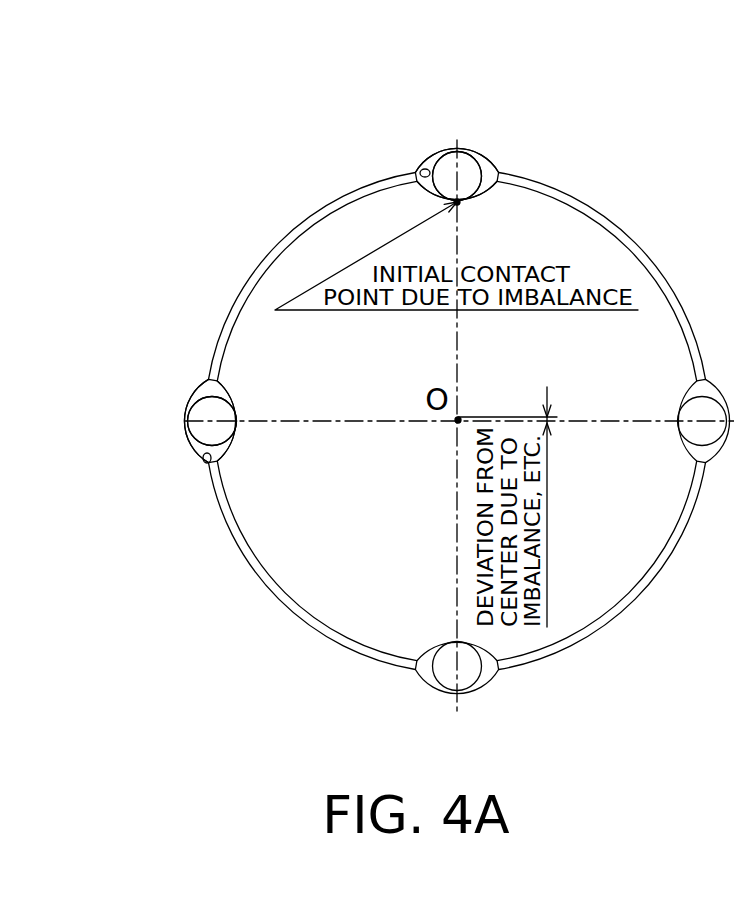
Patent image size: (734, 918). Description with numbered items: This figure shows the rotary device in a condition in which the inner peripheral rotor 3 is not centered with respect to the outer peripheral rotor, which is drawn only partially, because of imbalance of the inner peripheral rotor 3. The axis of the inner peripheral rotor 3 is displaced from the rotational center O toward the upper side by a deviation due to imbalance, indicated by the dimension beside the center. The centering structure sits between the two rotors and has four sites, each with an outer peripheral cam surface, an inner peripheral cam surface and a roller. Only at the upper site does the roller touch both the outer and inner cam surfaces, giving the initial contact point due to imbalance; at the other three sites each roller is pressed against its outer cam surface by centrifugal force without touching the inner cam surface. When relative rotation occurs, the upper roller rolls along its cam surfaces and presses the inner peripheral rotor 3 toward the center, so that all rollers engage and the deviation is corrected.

The inner peripheral rotor 3 is at (297, 270).